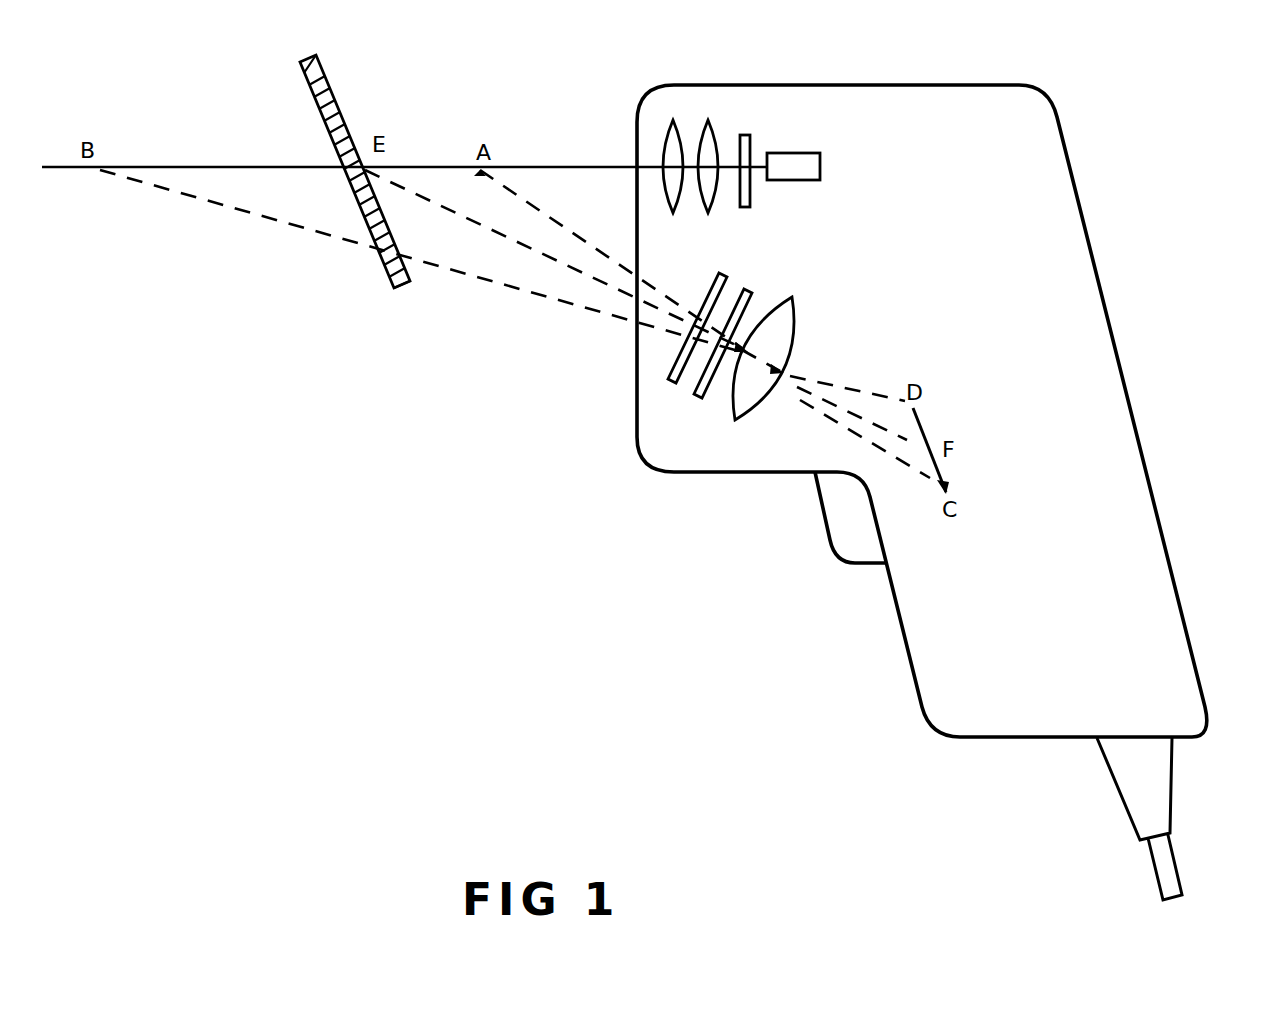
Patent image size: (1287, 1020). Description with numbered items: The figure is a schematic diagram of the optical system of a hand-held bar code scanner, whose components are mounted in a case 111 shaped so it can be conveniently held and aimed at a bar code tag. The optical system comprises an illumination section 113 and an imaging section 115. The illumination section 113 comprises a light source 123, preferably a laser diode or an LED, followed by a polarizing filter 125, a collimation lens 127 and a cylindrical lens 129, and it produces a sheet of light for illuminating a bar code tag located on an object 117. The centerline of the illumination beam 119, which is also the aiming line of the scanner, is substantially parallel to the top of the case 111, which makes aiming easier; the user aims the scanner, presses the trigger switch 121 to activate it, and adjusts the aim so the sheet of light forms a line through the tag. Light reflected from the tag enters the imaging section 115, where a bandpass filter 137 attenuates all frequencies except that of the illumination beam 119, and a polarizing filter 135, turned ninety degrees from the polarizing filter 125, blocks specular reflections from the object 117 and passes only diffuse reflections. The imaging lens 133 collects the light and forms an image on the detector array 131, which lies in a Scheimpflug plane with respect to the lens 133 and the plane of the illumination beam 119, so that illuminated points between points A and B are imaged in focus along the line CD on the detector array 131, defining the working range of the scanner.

The case 111 is at (1150, 488).
The illumination section 113 is at (776, 122).
The imaging section 115 is at (767, 399).
The object 117 is at (393, 290).
The illumination beam 119 is at (532, 165).
The trigger switch 121 is at (830, 543).
The light source 123 is at (850, 176).
The polarizing filter 125 is at (750, 137).
The collimation lens 127 is at (703, 126).
The cylindrical lens 129 is at (669, 137).
The detector array 131 is at (937, 423).
The imaging lens 133 is at (740, 428).
The polarizing filter 135 is at (697, 397).
The bandpass filter 137 is at (677, 365).